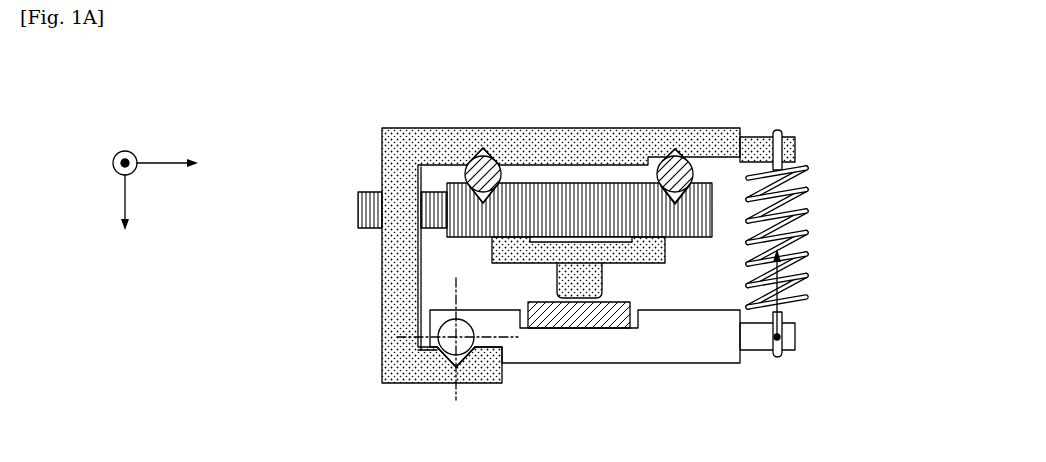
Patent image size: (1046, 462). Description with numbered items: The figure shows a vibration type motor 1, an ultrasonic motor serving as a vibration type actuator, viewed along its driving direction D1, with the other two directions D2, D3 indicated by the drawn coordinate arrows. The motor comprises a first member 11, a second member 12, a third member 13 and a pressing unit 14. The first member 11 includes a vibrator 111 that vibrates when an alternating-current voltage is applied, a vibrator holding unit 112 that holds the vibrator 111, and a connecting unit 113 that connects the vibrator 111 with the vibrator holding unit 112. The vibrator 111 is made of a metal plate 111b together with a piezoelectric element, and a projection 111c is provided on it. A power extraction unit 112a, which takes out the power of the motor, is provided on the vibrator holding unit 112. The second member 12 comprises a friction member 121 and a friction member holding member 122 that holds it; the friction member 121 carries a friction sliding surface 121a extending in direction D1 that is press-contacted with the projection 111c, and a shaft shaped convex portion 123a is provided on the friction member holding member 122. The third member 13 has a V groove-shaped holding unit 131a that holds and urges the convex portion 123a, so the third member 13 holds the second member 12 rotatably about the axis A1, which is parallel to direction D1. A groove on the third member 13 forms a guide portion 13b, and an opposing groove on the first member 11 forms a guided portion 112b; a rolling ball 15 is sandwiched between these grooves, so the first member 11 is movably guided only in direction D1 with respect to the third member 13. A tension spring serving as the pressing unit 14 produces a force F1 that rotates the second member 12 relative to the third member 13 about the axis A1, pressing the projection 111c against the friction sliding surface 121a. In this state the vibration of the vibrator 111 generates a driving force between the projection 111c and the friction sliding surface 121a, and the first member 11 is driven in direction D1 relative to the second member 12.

The vibration type motor 1 is at (565, 254).
The first member 11 is at (454, 338).
The vibrator 111 is at (482, 265).
The metal plate 111b is at (518, 257).
The projection 111c is at (603, 280).
The vibrator holding unit 112 is at (412, 162).
The power extraction unit 112a is at (370, 213).
The guided portion 112b is at (467, 213).
The connecting unit 113 is at (588, 244).
The second member 12 is at (664, 316).
The friction member 121 is at (618, 371).
The friction sliding surface 121a is at (550, 307).
The friction member holding member 122 is at (707, 353).
The convex portion 123a is at (450, 356).
The third member 13 is at (402, 168).
The guide portion 13b is at (652, 157).
The holding unit 131a is at (458, 362).
The pressing unit 14 is at (803, 190).
The rolling ball 15 is at (470, 160).
The axis A1 is at (452, 338).
The force F1 is at (795, 336).
The driving direction D1 is at (110, 152).
The second direction D2 is at (104, 206).
The third direction D3 is at (167, 148).